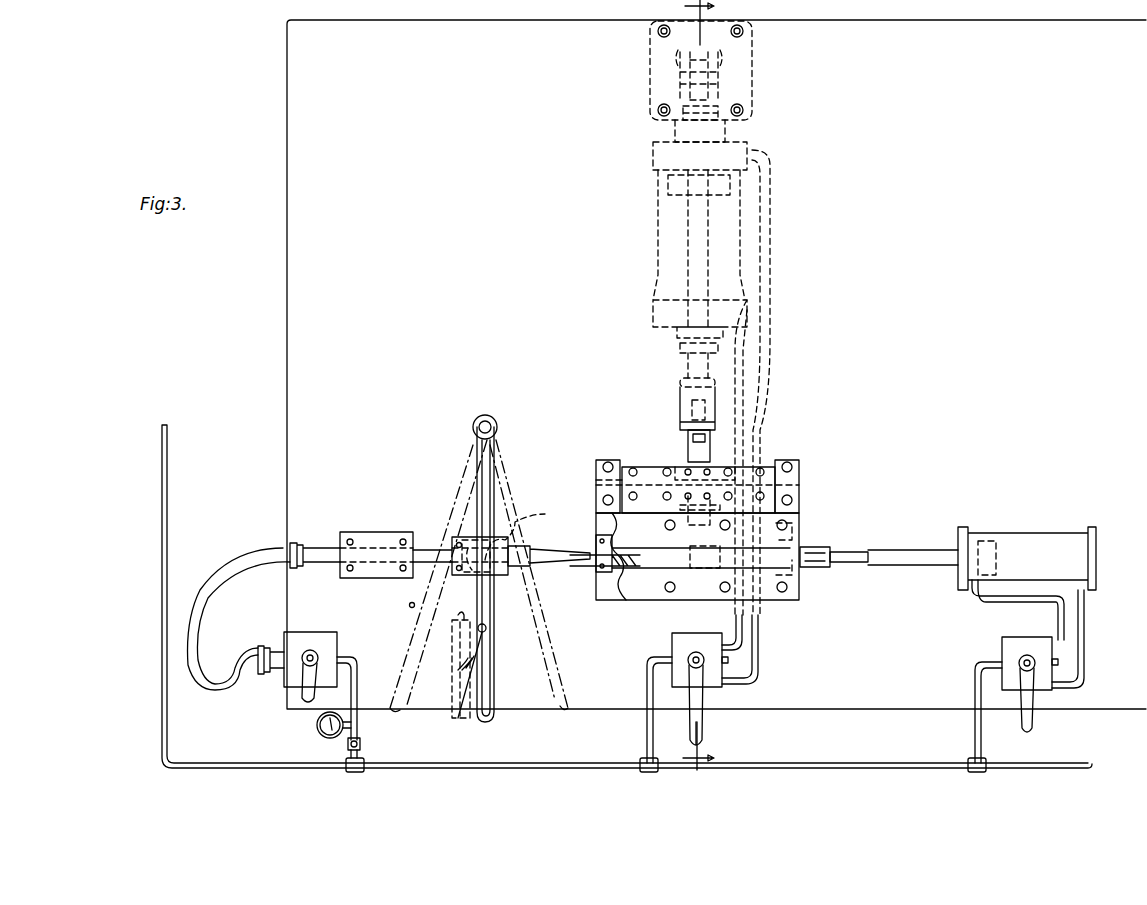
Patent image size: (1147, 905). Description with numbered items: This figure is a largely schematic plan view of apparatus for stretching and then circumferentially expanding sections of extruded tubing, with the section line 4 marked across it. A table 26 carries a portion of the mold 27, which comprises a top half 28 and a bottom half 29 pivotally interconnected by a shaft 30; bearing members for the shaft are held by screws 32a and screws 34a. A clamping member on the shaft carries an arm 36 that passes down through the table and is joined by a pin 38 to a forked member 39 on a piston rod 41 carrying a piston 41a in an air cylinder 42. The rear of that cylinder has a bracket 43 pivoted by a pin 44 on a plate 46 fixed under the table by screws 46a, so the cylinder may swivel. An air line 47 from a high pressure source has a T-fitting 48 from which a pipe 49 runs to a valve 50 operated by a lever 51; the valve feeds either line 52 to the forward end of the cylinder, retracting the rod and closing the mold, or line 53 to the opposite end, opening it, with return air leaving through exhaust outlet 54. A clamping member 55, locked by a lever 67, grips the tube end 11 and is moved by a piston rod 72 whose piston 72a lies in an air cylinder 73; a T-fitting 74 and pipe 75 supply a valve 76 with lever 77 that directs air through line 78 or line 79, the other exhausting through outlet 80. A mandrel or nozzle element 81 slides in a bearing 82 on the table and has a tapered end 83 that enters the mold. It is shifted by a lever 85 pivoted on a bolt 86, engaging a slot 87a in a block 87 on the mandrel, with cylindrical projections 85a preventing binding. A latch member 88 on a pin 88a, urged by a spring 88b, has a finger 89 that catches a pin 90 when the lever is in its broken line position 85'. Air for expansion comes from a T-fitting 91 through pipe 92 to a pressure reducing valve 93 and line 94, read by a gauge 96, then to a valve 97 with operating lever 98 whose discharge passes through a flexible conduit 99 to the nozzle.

The section line 4- 4 is at (692, 385).
The workpiece bar 11 is at (618, 555).
The table 26 is at (286, 310).
The mold 27 is at (813, 516).
The top half of the mold 28 is at (792, 597).
The bottom half of the mold 29 is at (602, 600).
The rod or shaft 30 is at (799, 483).
The screws 32a is at (608, 460).
The screws 34a is at (635, 470).
The arm 36 is at (670, 464).
The pin 38 is at (706, 418).
The forked member 39 is at (680, 400).
The piston rod 41 is at (682, 360).
The piston 41a is at (668, 186).
The air cylinder 42 is at (656, 240).
The bracket 43 is at (682, 114).
The pin 44 is at (718, 62).
The plate 46 is at (650, 63).
The screws 46a is at (658, 31).
The air line 47 is at (568, 764).
The T-fitting 48 is at (642, 760).
The tube or pipe 49 is at (648, 685).
The valve 50 is at (680, 638).
The lever 51 is at (702, 736).
The air line 52 is at (736, 623).
The line 53 is at (758, 628).
The exhaust outlet 54 is at (728, 663).
The clamping member 55 is at (822, 545).
The lever 67 is at (860, 563).
The piston rod 72 is at (896, 548).
The piston 72a is at (996, 558).
The air cylinder 73 is at (1024, 540).
The T-fitting 74 is at (970, 760).
The pipe 75 is at (975, 686).
The valve 76 is at (1018, 642).
The lever 77 is at (1032, 728).
The line 78 is at (1002, 604).
The line 79 is at (1084, 624).
The exhaust outlet 80 is at (1058, 662).
The mandrel or nozzle element 81 is at (515, 578).
The bearing 82 is at (370, 535).
The tapered portion of the mandrel 83 is at (565, 557).
The lever 85 is at (489, 589).
The broken line position of lever 85' is at (472, 576).
The cylindrical projections 85a is at (545, 514).
The bolt 86 is at (487, 415).
The block 87 is at (461, 538).
The opening or slot 87a is at (472, 576).
The latch member 88 is at (457, 720).
The pin 88a is at (486, 632).
The spring 88b is at (468, 678).
The finger 89 is at (458, 612).
The pin 90 is at (409, 602).
The T-fitting 91 is at (364, 762).
The pipe 92 is at (348, 748).
The adjustable pressure reducing valve 93 is at (360, 742).
The line 94 is at (358, 682).
The gauge 96 is at (316, 728).
The valve 97 is at (310, 637).
The operating lever 98 is at (303, 693).
The flexible conduit 99 is at (200, 615).